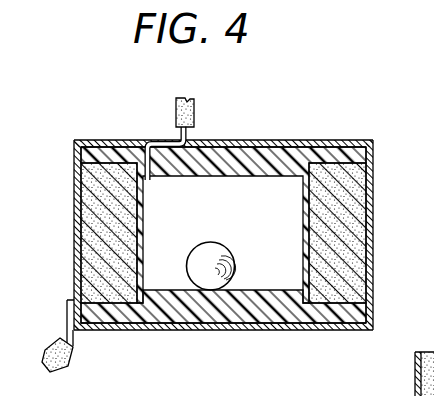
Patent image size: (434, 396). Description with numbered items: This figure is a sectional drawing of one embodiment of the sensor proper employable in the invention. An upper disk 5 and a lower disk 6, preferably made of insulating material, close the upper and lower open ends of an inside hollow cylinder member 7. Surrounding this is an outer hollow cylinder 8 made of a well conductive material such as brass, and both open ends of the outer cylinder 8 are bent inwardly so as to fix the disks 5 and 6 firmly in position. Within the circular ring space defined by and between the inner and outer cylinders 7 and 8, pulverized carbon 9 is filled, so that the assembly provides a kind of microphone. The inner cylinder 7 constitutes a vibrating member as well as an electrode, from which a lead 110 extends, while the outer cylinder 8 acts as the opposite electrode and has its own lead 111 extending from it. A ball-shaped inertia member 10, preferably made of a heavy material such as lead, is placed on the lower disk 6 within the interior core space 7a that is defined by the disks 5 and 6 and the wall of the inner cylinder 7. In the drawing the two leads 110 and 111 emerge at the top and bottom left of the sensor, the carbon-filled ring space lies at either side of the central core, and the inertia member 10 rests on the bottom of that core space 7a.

The upper disk 5 is at (239, 147).
The lower disk 6 is at (234, 310).
The inside hollow cylinder member 7 is at (143, 210).
The interior core space 7a is at (277, 268).
The outer hollow cylinder 8 is at (74, 203).
The pulverized carbon 9 is at (367, 257).
The ball-shaped inertia member 10 is at (210, 243).
The lead 110 is at (176, 110).
The lead 111 is at (70, 358).